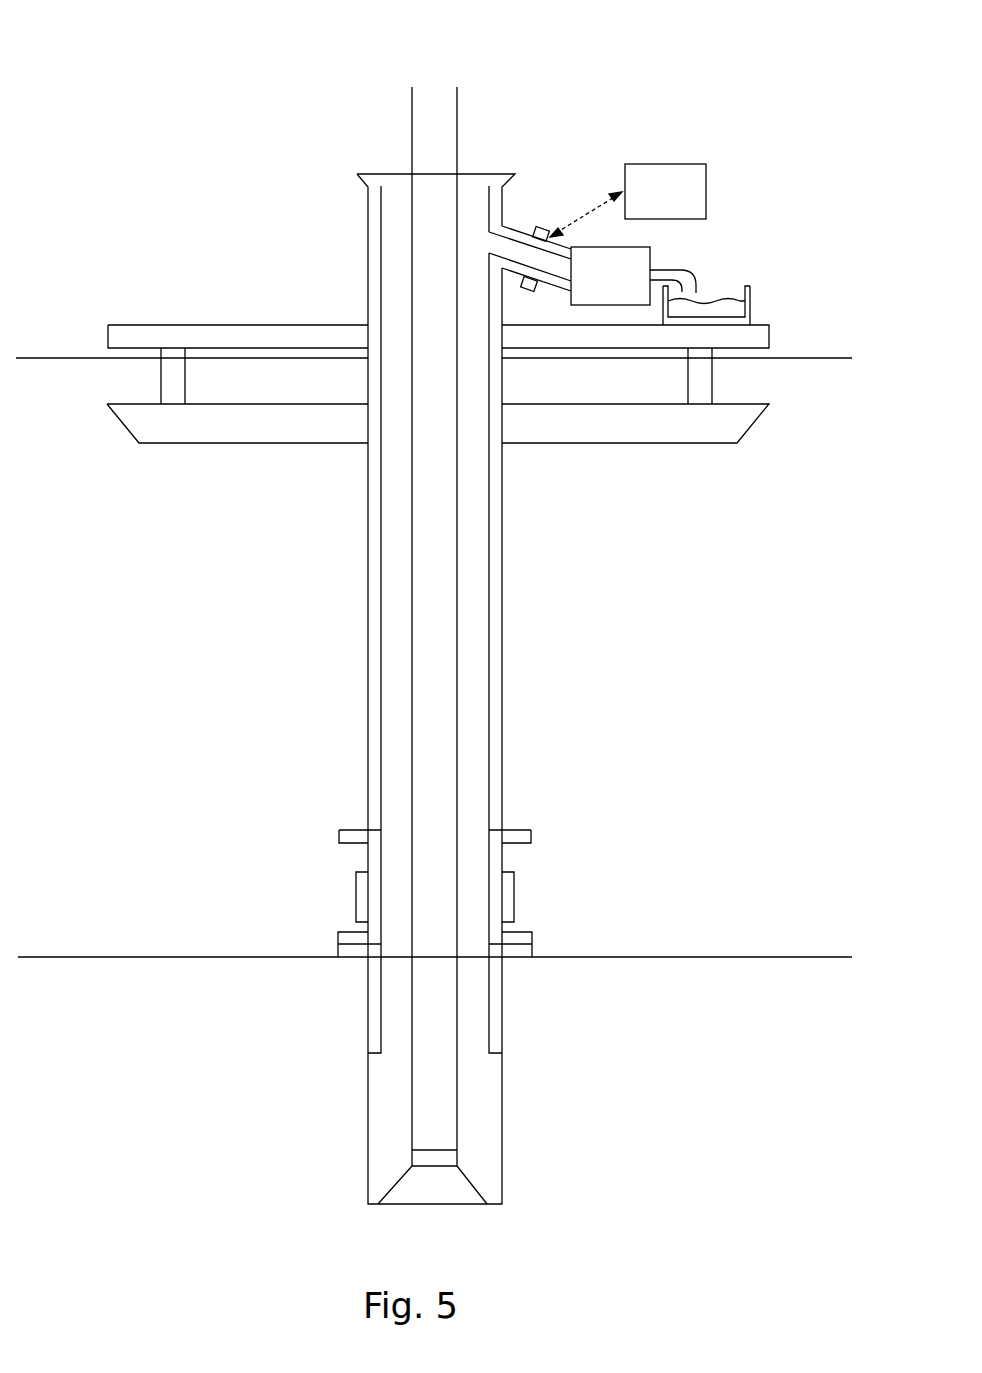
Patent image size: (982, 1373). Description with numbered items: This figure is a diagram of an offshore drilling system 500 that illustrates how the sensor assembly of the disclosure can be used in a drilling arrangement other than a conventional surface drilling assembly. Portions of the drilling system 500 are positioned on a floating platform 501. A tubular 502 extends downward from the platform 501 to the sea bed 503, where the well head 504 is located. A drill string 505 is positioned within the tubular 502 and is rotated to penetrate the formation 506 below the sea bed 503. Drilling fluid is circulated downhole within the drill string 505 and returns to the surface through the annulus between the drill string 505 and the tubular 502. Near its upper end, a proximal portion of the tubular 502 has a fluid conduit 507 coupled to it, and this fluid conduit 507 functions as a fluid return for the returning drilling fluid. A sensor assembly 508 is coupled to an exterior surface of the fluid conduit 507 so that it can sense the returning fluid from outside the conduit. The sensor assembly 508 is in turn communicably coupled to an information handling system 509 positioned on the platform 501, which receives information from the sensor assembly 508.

The offshore drilling system 500 is at (305, 112).
The floating platform 501 is at (217, 325).
The tubular 502 is at (502, 538).
The sea bed 503 is at (625, 957).
The well head 504 is at (337, 947).
The drill string 505 is at (458, 658).
The formation 506 is at (655, 1048).
The fluid conduit 507 is at (512, 236).
The sensor assembly 508 is at (545, 230).
The information handling system 509 is at (706, 188).